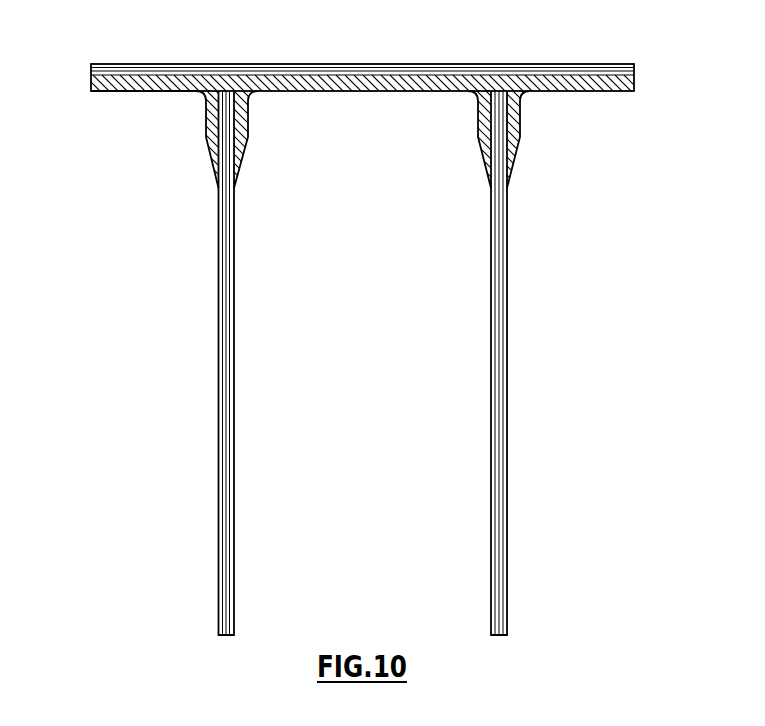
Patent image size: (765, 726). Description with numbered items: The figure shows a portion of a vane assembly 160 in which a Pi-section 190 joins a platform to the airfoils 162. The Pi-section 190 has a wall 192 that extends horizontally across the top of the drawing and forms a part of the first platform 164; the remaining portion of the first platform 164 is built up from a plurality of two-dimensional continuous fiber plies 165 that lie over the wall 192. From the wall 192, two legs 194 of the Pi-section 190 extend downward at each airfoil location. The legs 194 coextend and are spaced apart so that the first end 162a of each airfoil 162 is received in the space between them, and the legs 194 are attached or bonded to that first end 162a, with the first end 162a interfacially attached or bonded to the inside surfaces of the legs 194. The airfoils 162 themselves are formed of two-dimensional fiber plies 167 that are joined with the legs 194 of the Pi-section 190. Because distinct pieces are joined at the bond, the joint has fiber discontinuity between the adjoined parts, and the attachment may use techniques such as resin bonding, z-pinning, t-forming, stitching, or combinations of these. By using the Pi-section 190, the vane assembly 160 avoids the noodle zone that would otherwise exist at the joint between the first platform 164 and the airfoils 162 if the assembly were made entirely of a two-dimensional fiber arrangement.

The vane assembly 160 is at (109, 348).
The airfoils 162 is at (243, 402).
The first end of the airfoil 162a is at (486, 105).
The first platform 164 is at (601, 58).
The 2D continuous fiber plies 165 is at (637, 64).
The 2D fiber plies 167 is at (492, 641).
The Pi-section 190 is at (165, 100).
The wall 192 is at (108, 91).
The legs 194 is at (210, 155).